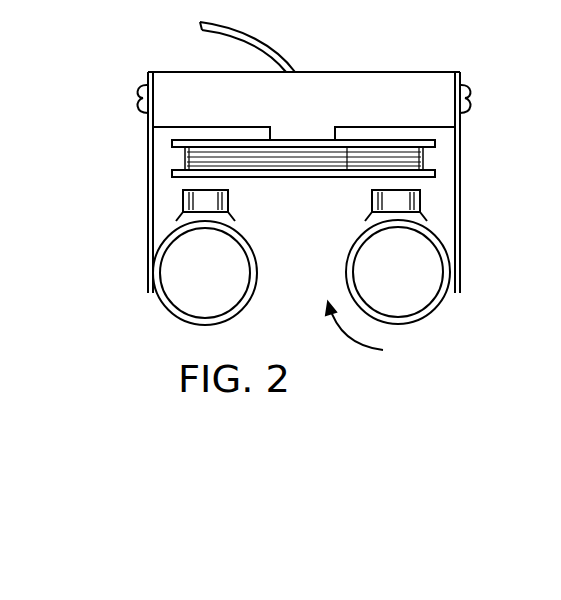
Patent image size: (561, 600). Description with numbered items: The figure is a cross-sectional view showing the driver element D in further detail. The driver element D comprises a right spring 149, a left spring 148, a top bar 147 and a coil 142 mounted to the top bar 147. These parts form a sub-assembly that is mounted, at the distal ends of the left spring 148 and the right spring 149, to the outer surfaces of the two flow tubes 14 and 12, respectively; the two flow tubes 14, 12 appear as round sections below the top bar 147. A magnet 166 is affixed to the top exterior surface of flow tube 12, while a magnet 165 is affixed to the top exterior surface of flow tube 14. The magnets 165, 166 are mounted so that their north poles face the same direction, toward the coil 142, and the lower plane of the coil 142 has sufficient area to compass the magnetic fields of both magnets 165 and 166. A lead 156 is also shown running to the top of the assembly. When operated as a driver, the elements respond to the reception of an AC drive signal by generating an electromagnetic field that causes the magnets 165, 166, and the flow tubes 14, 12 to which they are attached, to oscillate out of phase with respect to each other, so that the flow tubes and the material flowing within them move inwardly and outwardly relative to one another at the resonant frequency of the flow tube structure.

The flow tube 12 is at (438, 310).
The flow tube 14 is at (247, 307).
The coil 142 is at (263, 178).
The top bar 147 is at (342, 72).
The left spring 148 is at (150, 239).
The right spring 149 is at (460, 198).
The wire / cable 156 is at (232, 34).
The magnet 165 is at (230, 205).
The magnet 166 is at (372, 202).
The driver element D is at (80, 127).